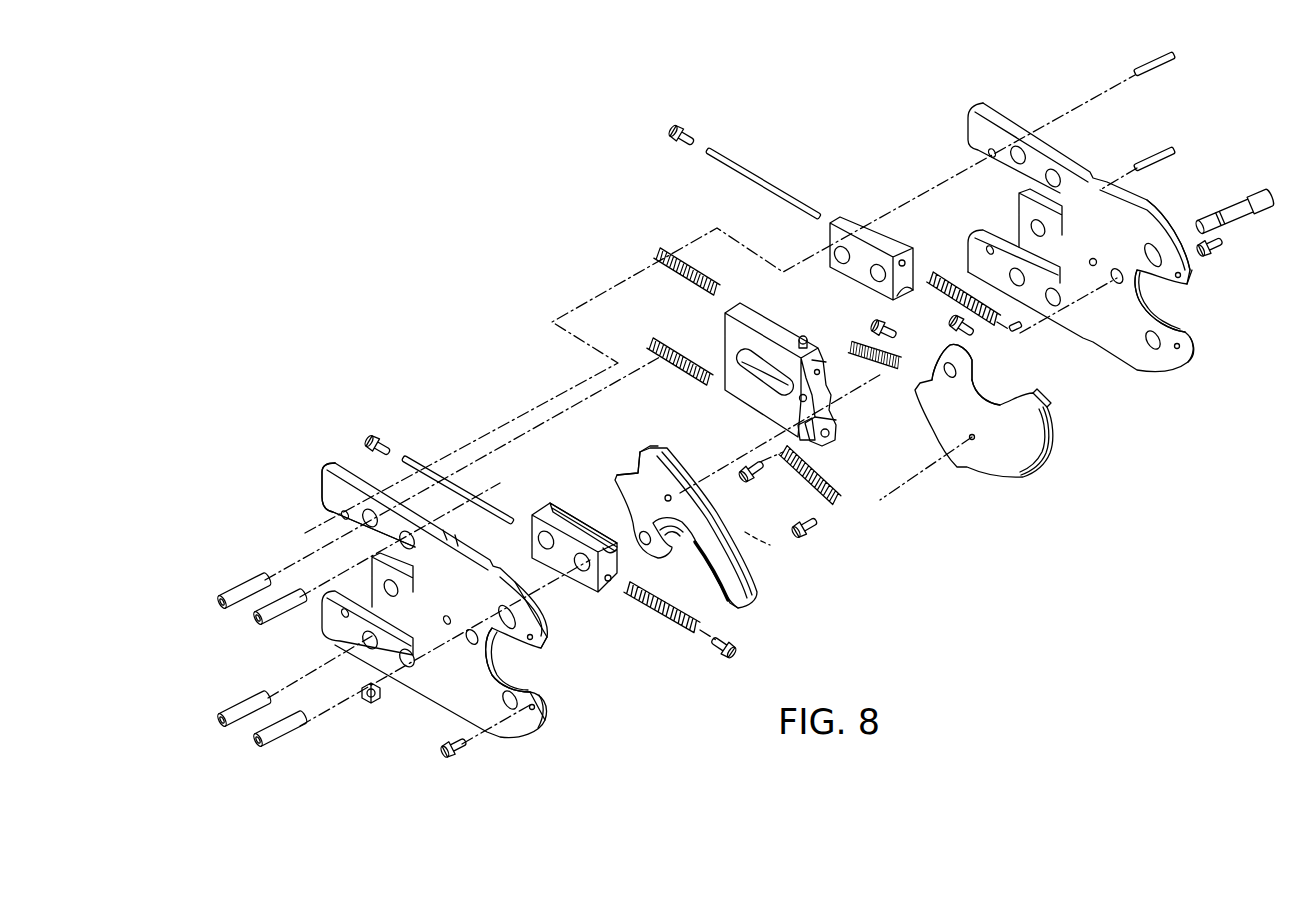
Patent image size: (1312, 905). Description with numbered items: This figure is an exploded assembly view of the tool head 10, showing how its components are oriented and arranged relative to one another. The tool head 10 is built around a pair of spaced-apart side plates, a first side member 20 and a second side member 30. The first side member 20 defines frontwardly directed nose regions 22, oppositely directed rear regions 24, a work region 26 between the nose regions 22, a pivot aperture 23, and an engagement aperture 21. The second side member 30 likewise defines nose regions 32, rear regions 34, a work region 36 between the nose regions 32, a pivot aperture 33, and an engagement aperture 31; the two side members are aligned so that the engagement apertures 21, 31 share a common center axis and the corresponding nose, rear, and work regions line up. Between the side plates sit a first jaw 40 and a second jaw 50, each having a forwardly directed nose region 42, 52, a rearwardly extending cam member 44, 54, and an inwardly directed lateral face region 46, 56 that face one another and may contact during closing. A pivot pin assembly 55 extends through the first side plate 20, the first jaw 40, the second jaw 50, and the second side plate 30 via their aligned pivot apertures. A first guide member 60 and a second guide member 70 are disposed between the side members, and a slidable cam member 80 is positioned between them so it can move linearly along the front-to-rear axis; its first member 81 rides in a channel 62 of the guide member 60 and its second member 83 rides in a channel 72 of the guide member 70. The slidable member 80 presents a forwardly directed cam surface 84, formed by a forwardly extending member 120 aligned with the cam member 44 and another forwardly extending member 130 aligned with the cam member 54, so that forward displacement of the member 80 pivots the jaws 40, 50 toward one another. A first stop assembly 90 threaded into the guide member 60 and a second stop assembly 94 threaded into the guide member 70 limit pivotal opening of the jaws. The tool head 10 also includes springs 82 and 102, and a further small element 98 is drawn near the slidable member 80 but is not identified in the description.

The tool head 10 is at (350, 278).
The first side member 20 is at (467, 697).
The engagement aperture 21 is at (380, 593).
The nose regions 22 is at (547, 637).
The pivot aperture 23 is at (472, 650).
The rear regions 24 is at (325, 482).
The work region 26 is at (534, 668).
The second side member 30 is at (1120, 343).
The engagement aperture 31 is at (1033, 228).
The nose regions 32 is at (1198, 275).
The pivot aperture 33 is at (1148, 232).
The rear regions 34 is at (966, 130).
The work region 36 is at (1187, 314).
The first jaw 40 is at (735, 573).
The nose region 42 is at (745, 603).
The first cam member 44 is at (626, 474).
The lateral face region 46 is at (770, 545).
The second jaw 50 is at (1027, 456).
The nose region 52 is at (1057, 421).
The second cam member 54 is at (920, 383).
The lateral face region 56 is at (1000, 420).
The pivot pin assembly 55 is at (1266, 198).
The first guide member 60 is at (860, 222).
The channel 62 is at (903, 294).
The second guide member 70 is at (582, 596).
The channel 72 is at (576, 523).
The slidable cam member 80 is at (733, 332).
The first member 81 is at (808, 336).
The spring 82 is at (714, 288).
The second member 83 is at (806, 441).
The cam surface 84 is at (826, 368).
The first stop assembly 90 is at (727, 152).
The second stop assembly 94 is at (404, 461).
The spring 98 is at (862, 342).
The spring 102 is at (827, 492).
The forwardly extending member 120 is at (822, 367).
The forwardly extending member 130 is at (843, 433).